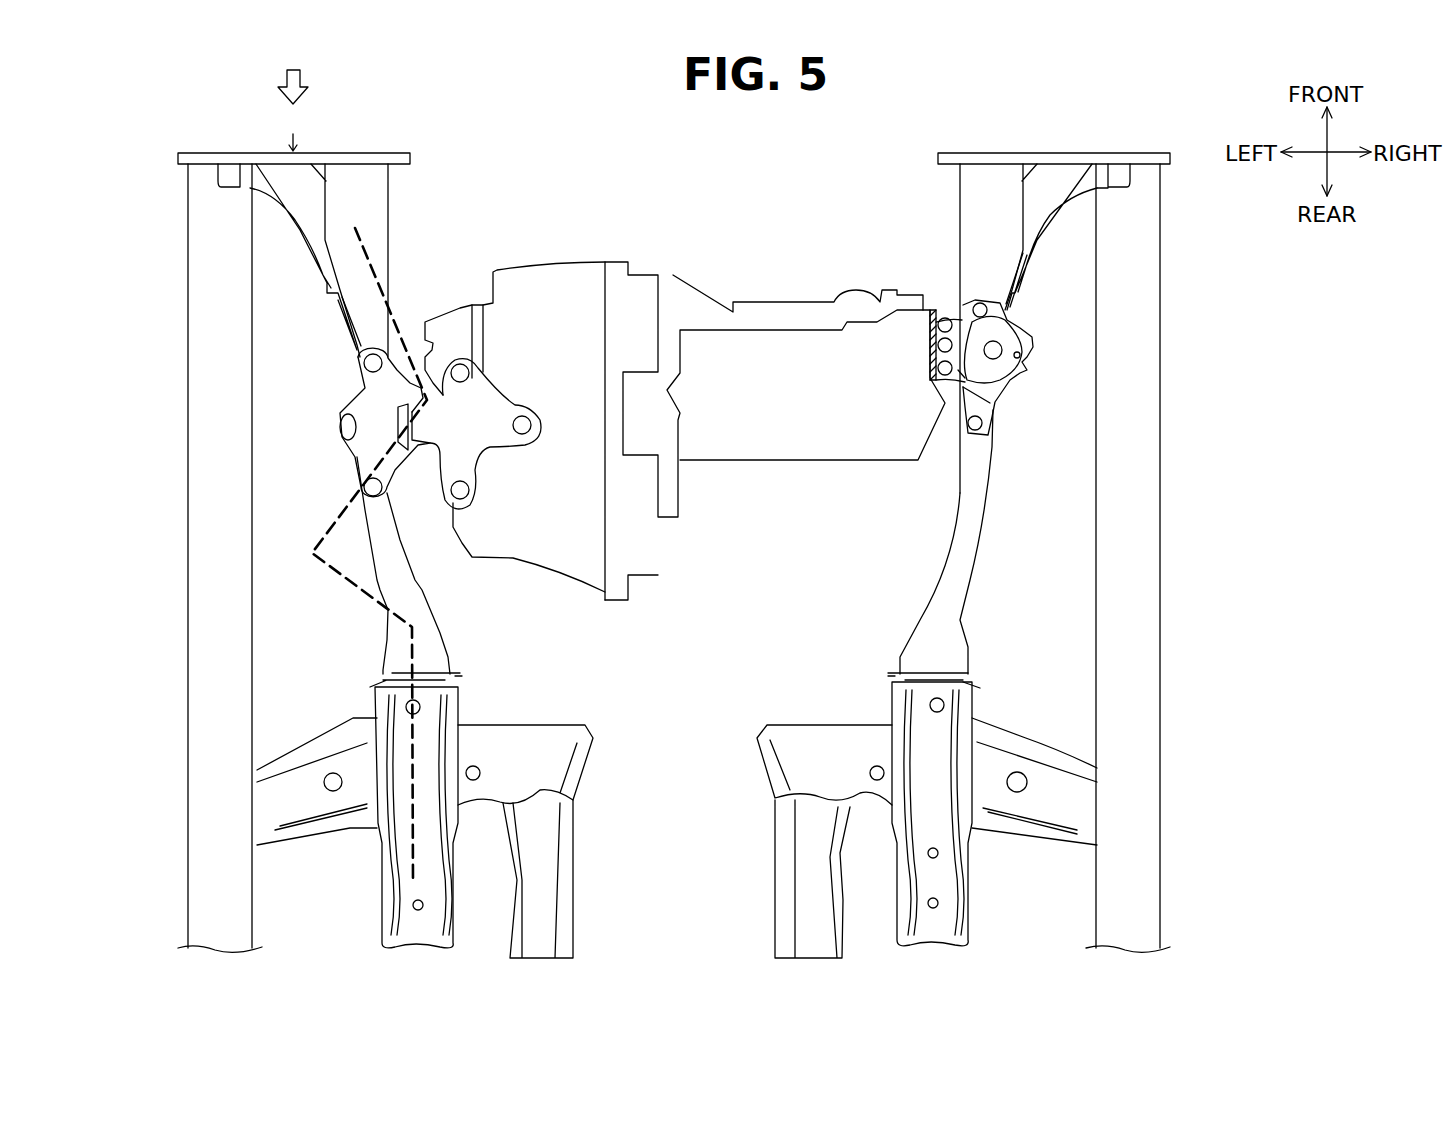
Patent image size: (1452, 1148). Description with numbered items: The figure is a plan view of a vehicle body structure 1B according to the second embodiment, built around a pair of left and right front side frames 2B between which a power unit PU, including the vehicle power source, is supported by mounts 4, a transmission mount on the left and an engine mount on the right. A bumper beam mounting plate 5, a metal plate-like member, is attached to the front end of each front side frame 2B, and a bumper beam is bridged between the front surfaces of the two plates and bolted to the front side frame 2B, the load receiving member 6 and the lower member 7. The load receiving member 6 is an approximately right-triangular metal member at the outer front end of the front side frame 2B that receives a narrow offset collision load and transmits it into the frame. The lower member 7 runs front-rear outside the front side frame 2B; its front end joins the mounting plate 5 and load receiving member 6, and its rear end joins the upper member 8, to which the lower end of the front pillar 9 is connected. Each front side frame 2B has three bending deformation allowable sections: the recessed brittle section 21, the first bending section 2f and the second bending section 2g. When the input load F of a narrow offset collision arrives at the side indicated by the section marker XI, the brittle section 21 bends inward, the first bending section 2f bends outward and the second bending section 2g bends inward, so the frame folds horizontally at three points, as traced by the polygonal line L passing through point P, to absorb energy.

The vehicle body structure 1B is at (915, 121).
The front side frame 2B is at (373, 210).
The first bending section 2f is at (357, 475).
The second bending section 2g is at (388, 620).
The mount 4 is at (367, 427).
The bumper beam mounting plate 5 is at (186, 153).
The load receiving member 6 is at (305, 212).
The lower member 7 is at (188, 335).
The upper member 8 is at (188, 720).
The front pillar 9 is at (188, 920).
The brittle section 21 is at (365, 377).
The power unit PU is at (712, 296).
The polygonal line L is at (418, 640).
The point P is at (415, 856).
The input load F is at (293, 71).
The section line XI is at (293, 130).